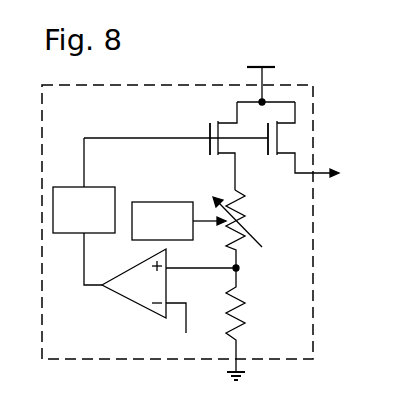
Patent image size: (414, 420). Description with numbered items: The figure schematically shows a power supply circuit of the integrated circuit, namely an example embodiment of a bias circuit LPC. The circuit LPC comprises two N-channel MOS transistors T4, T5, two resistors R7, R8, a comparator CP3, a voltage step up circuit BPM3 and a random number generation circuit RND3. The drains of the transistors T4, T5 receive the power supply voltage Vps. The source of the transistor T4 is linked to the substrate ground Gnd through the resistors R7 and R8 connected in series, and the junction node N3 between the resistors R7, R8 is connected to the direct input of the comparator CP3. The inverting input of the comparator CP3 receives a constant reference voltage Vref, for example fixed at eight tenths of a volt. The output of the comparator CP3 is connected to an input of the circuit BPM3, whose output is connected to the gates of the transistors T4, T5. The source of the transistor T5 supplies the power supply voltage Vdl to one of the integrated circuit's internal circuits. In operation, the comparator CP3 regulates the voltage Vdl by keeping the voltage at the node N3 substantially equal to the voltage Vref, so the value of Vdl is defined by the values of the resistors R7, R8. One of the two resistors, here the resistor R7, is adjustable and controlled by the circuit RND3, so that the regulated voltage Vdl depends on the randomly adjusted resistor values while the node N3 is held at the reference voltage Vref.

The bias circuit LPC is at (198, 116).
The power supply voltage Vps is at (260, 74).
The N-channel MOS transistor T4 is at (205, 157).
The N-channel MOS transistor T5 is at (268, 157).
The power supply voltage Vdl is at (351, 173).
The voltage step up circuit BPM3 is at (84, 210).
The comparator CP3 is at (134, 283).
The reference voltage Vref is at (185, 329).
The random number generation circuit RND3 is at (179, 221).
The resistor R7 is at (250, 217).
The junction node N3 is at (242, 271).
The resistor R8 is at (248, 322).
The substrate ground Gnd is at (226, 374).